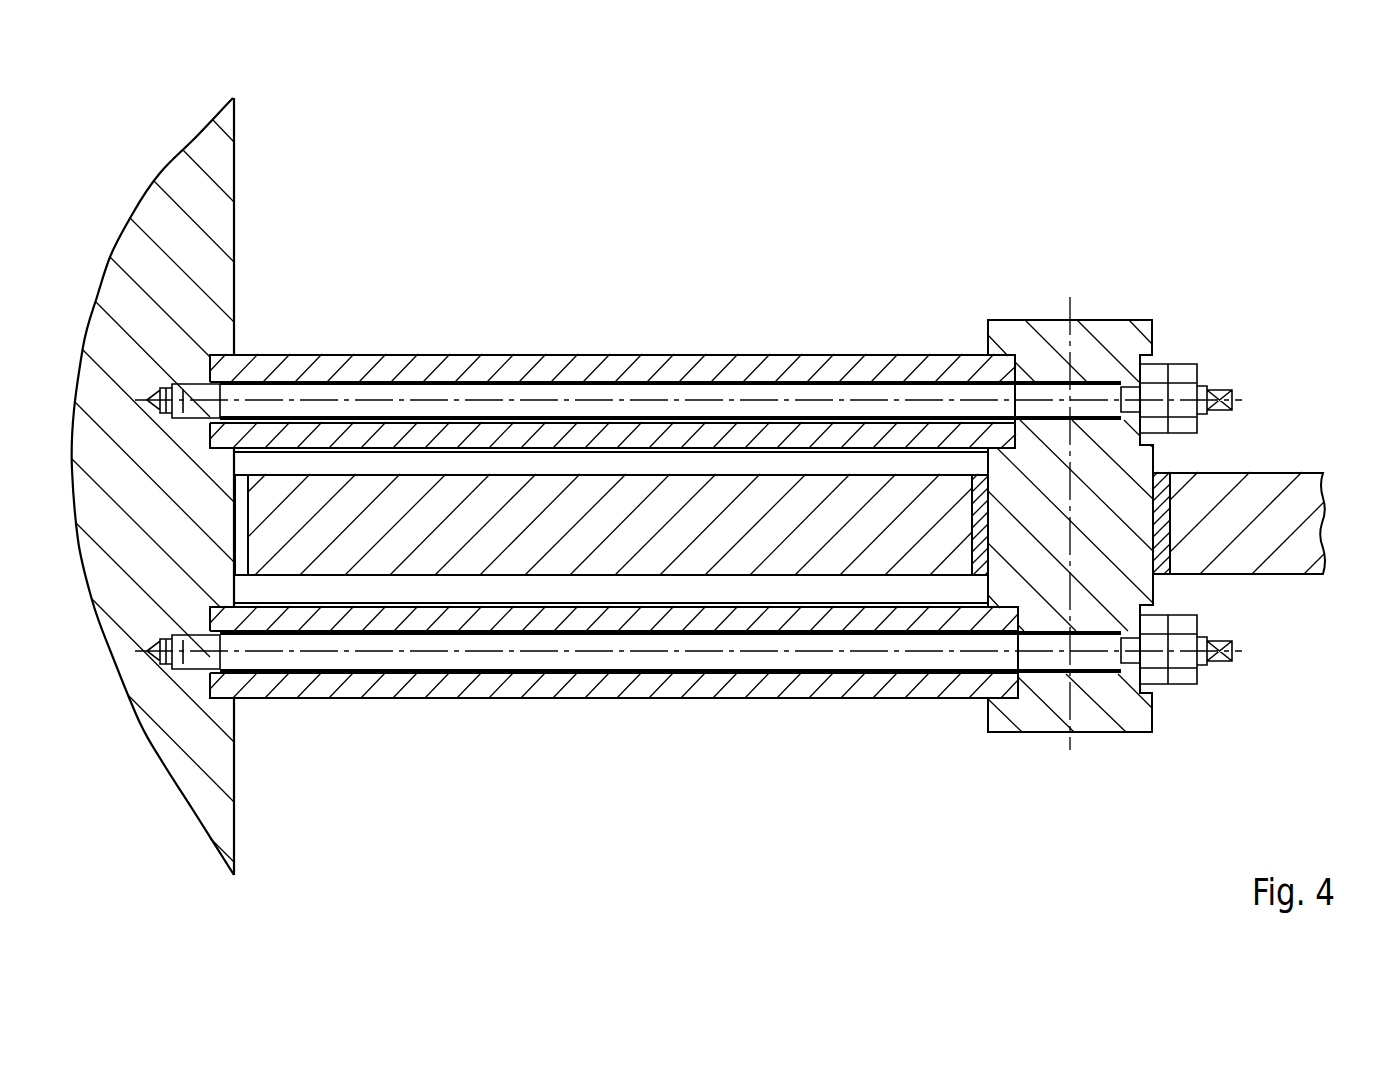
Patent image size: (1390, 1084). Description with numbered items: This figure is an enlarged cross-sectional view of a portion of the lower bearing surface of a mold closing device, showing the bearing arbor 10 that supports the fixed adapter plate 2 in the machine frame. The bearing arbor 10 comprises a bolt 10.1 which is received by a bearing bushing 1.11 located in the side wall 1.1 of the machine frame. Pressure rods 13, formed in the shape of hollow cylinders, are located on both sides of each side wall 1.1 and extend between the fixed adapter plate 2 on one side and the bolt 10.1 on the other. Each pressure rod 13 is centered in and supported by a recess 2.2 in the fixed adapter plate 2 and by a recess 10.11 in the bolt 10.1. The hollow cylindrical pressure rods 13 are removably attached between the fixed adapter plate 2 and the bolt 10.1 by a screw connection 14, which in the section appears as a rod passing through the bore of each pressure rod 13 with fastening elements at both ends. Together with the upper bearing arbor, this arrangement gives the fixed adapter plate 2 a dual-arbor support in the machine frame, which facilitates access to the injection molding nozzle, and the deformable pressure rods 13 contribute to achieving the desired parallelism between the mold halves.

The fixed adapter plate 2 is at (234, 226).
The recess 2.2 is at (234, 341).
The side wall 1.1 is at (436, 492).
The pressure rod 13 is at (599, 365).
The screw connection 14 is at (700, 400).
The bearing arbor 10 is at (1070, 298).
The bolt 10.1 is at (1123, 335).
The recess 10.11 is at (1000, 353).
The bearing bushing 1.11 is at (1190, 474).